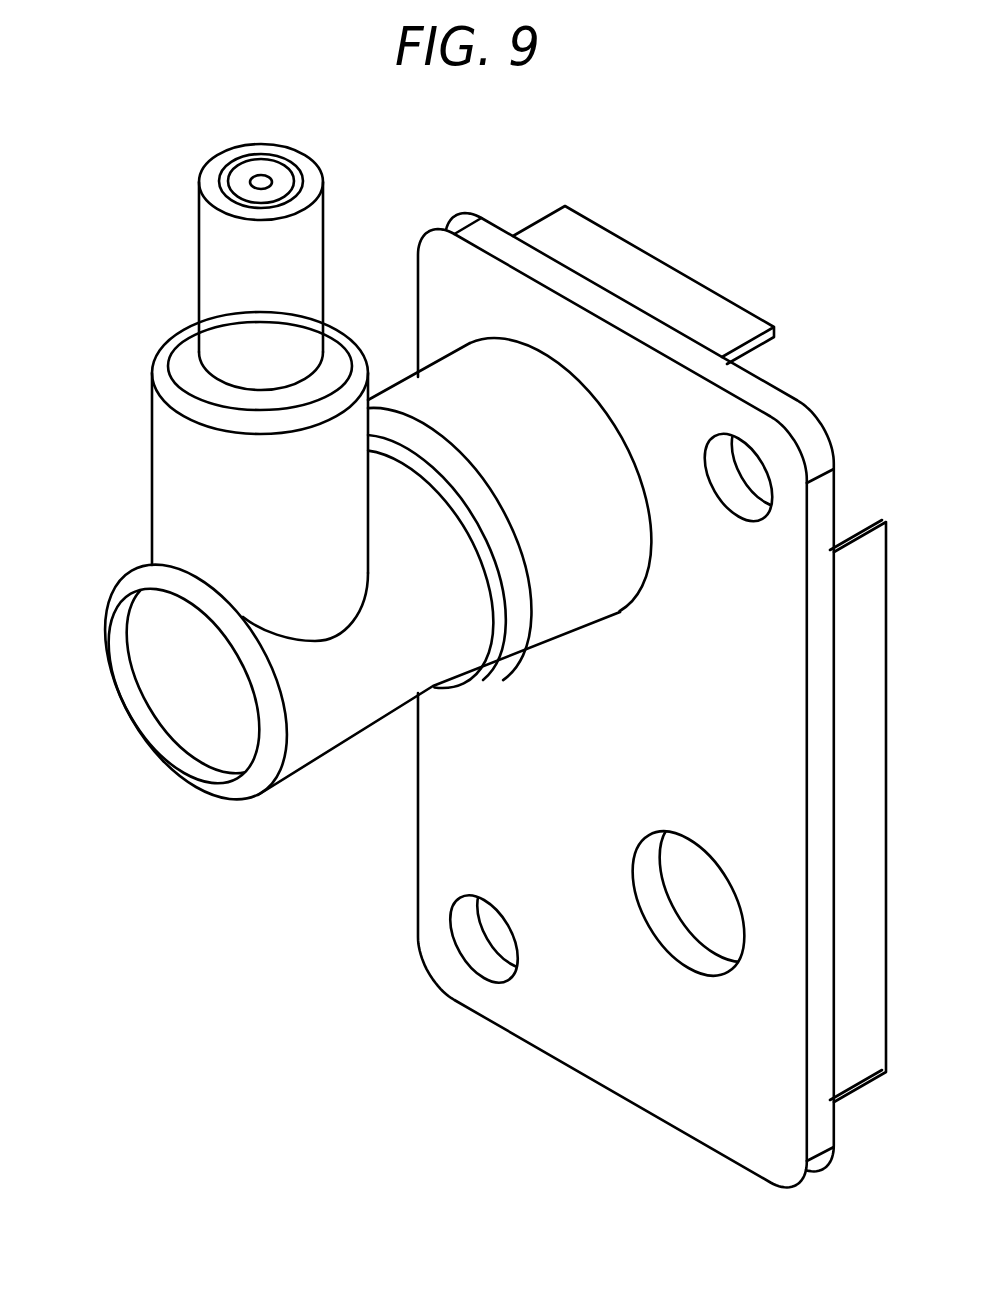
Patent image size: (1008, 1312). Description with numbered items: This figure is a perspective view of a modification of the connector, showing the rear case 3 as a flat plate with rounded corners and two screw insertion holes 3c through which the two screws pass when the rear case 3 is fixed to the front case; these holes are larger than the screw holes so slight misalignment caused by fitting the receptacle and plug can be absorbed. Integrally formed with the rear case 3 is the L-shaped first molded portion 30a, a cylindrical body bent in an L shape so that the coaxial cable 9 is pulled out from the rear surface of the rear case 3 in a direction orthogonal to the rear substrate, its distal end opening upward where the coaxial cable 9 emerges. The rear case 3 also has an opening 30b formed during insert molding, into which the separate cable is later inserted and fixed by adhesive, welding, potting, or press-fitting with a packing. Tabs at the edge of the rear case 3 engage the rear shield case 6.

The rear case 3 is at (440, 263).
The screw insertion holes 3c is at (752, 463).
The rear shield case 6 is at (654, 261).
The coaxial cable 9 is at (198, 247).
The L-shaped first molded portion 30a is at (151, 477).
The opening 30b is at (678, 945).